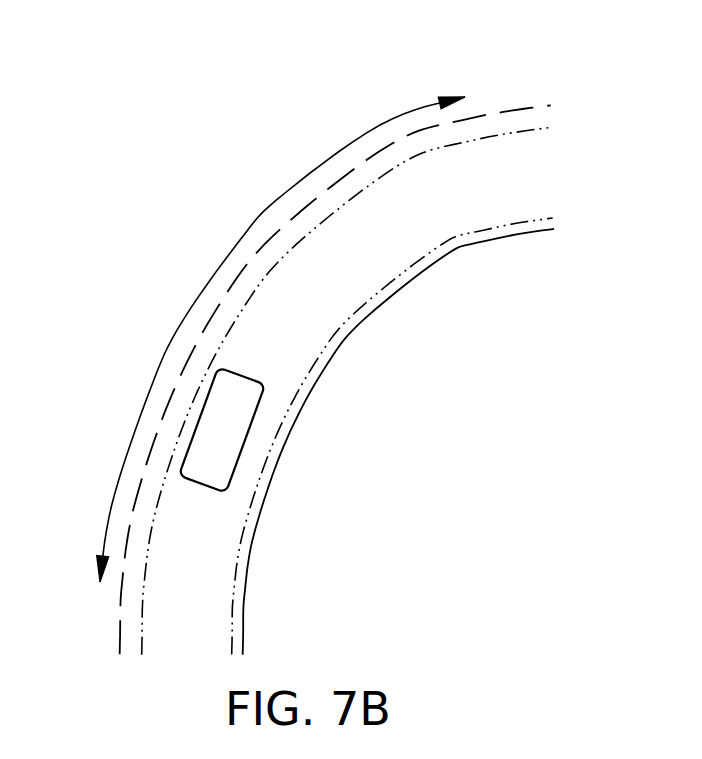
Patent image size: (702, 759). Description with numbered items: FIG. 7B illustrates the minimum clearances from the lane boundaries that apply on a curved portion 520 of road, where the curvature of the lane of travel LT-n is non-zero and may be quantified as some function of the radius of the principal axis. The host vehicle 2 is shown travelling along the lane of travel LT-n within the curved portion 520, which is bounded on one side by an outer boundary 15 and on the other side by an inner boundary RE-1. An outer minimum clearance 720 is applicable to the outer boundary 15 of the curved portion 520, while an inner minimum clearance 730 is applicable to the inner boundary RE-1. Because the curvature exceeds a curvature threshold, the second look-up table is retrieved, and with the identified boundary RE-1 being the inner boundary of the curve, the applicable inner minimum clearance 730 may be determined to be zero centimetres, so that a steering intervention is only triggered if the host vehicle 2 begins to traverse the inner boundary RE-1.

The curved portion 520 is at (255, 222).
The outer boundary 15 is at (118, 605).
The outer minimum clearance 720 is at (523, 130).
The inner minimum clearance 730 is at (402, 272).
The lane of travel LT-n is at (347, 356).
The inner boundary RE-1 is at (355, 328).
The host vehicle 2 is at (252, 427).